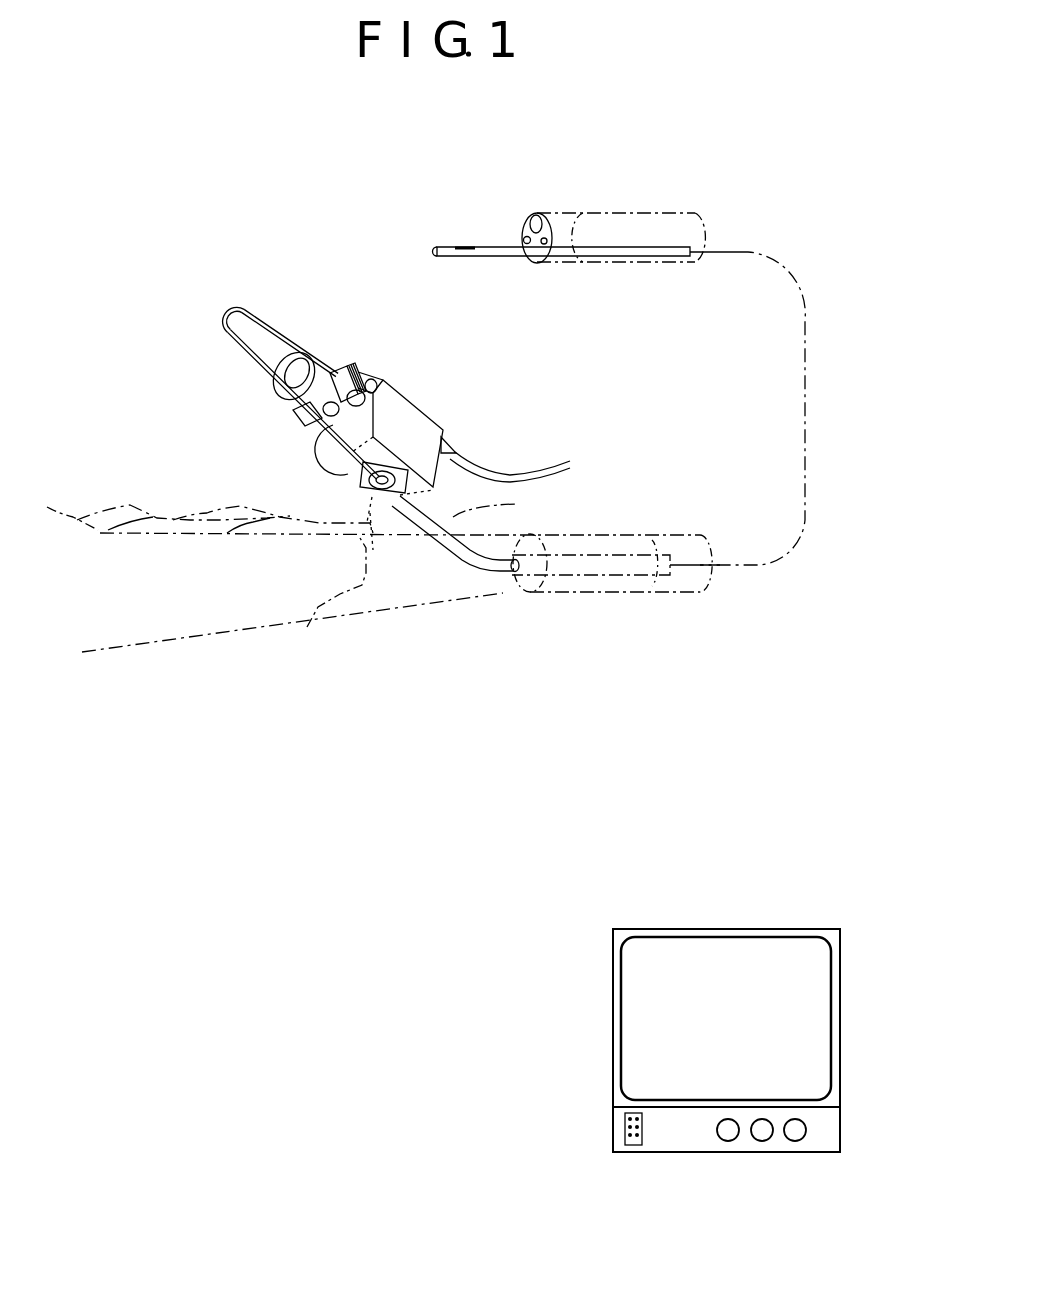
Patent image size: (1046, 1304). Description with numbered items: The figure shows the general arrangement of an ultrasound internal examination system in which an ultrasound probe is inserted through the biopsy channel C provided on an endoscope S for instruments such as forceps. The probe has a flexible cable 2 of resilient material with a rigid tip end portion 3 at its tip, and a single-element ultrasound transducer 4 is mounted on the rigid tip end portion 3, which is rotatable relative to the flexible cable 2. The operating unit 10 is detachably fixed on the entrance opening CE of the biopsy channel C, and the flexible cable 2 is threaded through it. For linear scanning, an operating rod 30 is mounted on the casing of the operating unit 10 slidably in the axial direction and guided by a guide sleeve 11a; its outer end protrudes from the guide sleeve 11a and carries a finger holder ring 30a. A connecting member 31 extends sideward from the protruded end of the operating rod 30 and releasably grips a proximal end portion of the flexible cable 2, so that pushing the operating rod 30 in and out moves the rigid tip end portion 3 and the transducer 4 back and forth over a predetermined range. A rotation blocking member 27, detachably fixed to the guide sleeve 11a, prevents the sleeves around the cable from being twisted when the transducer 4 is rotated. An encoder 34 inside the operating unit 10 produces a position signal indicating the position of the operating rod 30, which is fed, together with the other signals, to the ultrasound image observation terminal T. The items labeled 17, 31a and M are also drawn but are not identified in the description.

The flexible cable 2 is at (493, 569).
The rigid tip end portion 3 is at (437, 246).
The ultrasound transducer element 4 is at (456, 246).
The operating unit 10 is at (440, 413).
The guide sleeve 11a is at (365, 421).
The cable 17 is at (540, 463).
The rotation blocking member 27 is at (338, 372).
The operating rod 30 is at (309, 352).
The finger holder ring 30a is at (272, 370).
The connecting member 31 is at (296, 404).
The rod end 31a is at (310, 421).
The encoder 34 is at (327, 468).
The biopsy channel C is at (628, 572).
The entrance opening CE is at (505, 505).
The endoscope S is at (397, 614).
The monitor screen M is at (675, 950).
The ultrasound image observation terminal T is at (611, 1106).